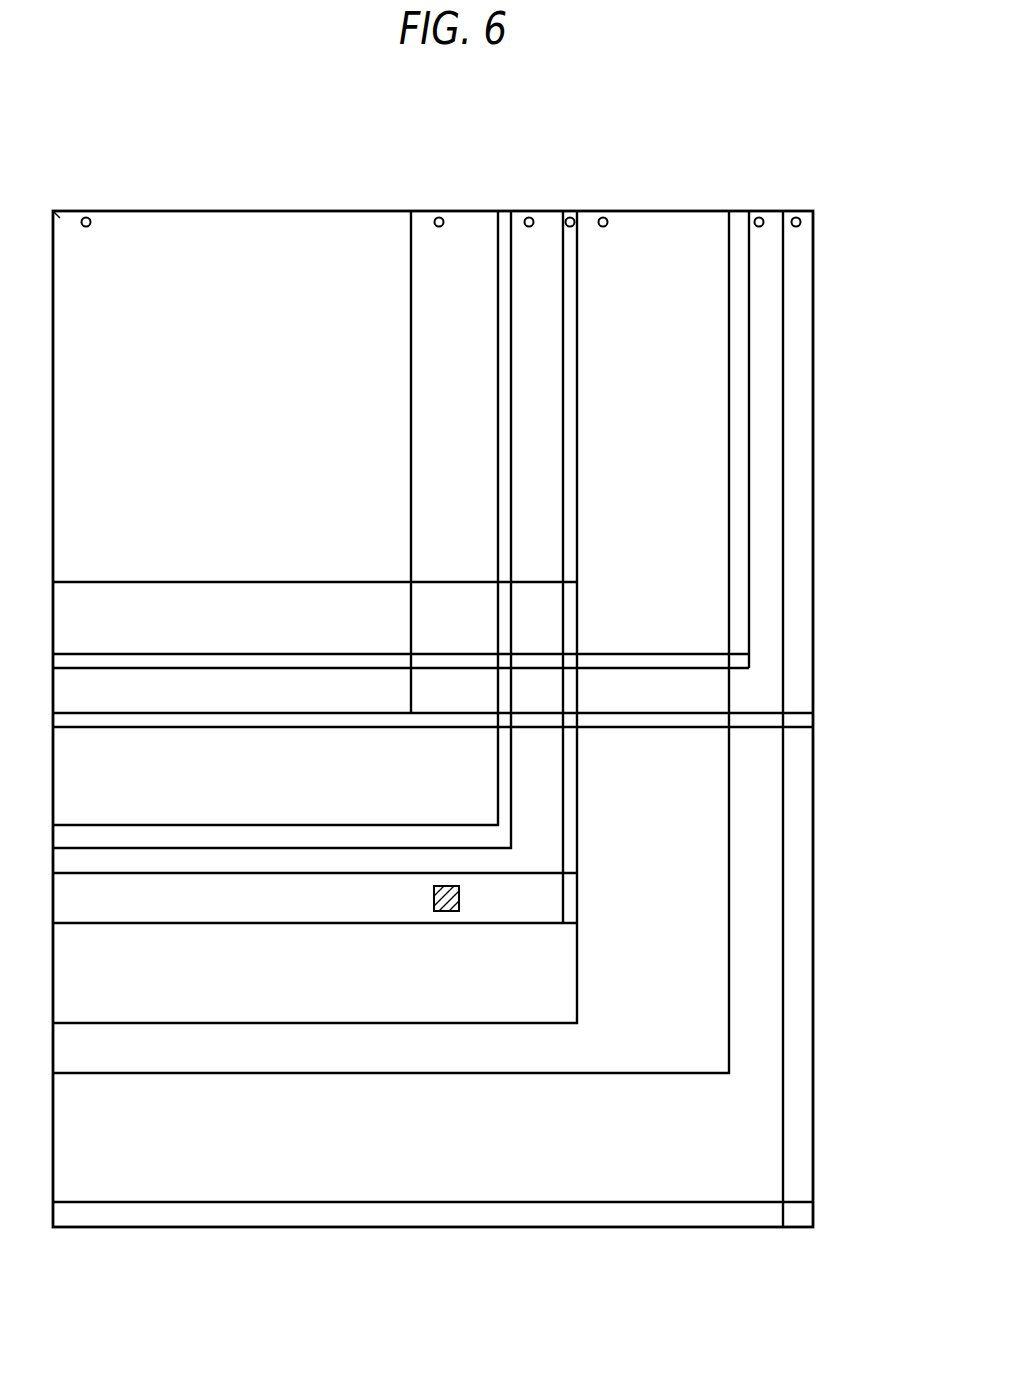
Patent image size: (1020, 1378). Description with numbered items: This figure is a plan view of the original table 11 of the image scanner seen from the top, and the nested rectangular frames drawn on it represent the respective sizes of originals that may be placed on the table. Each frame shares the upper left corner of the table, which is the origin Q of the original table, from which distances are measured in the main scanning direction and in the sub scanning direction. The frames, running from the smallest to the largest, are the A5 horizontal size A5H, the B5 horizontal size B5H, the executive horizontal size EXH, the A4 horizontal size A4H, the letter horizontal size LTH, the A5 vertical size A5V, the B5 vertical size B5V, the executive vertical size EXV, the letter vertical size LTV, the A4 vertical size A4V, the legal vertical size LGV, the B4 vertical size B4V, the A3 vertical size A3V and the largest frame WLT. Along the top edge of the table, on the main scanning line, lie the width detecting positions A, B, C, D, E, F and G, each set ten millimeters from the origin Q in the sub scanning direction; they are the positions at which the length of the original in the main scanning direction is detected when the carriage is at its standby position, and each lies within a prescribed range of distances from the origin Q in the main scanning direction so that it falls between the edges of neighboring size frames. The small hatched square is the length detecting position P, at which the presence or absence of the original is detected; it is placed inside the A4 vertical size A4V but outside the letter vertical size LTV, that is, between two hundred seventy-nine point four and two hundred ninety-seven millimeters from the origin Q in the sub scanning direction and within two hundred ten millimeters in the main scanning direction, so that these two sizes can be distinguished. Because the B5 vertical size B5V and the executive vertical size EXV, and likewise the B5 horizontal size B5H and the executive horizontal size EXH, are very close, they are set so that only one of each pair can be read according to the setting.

The original table 11 is at (222, 211).
The origin Q is at (64, 220).
The width detecting position A is at (86, 217).
The width detecting position B is at (439, 217).
The width detecting position C is at (529, 217).
The width detecting position D is at (570, 217).
The width detecting position E is at (603, 217).
The width detecting position F is at (759, 217).
The width detecting position G is at (796, 217).
The A5 horizontal size frame A5H is at (566, 582).
The B5 horizontal size frame B5H is at (728, 654).
The executive horizontal size frame EXH is at (749, 668).
The A4 horizontal size frame A4H is at (813, 713).
The letter horizontal size frame LTH is at (813, 727).
The A5 vertical size frame A5V is at (409, 713).
The B5 vertical size frame B5V is at (496, 825).
The executive vertical size frame EXV is at (511, 848).
The letter vertical size frame LTV is at (577, 873).
The A4 vertical size frame A4V is at (577, 923).
The legal vertical size frame LGV is at (577, 1023).
The B4 vertical size frame B4V is at (727, 1073).
The A3 vertical size frame A3V is at (813, 1202).
The WLT size frame WLT is at (783, 1227).
The length detecting position P is at (459, 900).